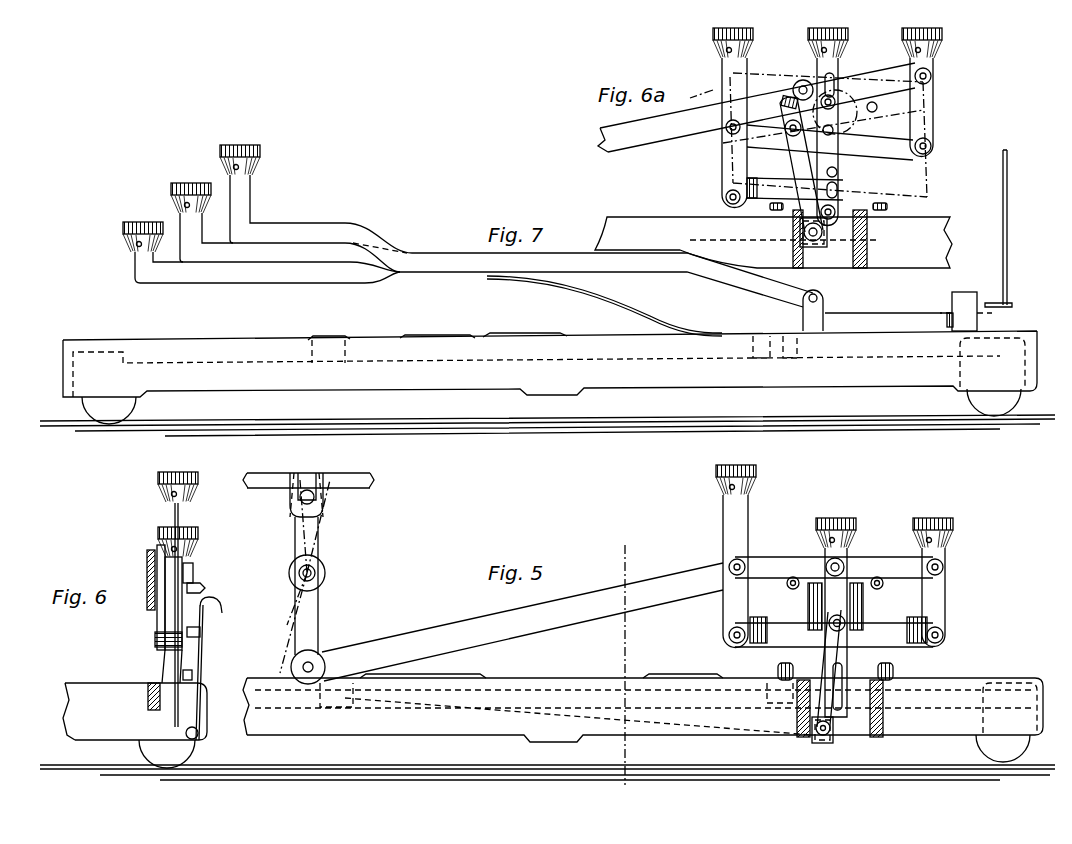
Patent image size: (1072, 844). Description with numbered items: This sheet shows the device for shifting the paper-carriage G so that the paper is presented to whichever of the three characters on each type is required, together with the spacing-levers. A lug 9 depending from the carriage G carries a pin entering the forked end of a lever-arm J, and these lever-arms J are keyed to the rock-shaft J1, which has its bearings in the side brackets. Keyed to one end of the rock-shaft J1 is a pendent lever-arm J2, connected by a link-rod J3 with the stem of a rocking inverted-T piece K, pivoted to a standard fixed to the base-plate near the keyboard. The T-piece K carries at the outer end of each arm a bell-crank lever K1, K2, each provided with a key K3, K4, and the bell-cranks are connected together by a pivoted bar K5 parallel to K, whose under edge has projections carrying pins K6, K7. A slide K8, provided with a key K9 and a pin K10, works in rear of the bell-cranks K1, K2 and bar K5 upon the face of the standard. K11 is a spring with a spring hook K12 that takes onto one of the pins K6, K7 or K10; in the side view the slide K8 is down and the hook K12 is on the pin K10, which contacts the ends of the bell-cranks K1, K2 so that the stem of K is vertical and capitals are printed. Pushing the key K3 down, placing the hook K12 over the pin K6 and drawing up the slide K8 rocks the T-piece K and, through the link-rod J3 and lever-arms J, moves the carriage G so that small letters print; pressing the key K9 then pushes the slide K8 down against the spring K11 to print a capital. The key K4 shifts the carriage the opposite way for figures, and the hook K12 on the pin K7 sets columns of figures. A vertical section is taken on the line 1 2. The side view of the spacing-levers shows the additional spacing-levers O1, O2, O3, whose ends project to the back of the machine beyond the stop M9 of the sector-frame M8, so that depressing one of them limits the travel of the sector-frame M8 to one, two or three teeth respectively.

In FIG. 7, the car frame A is at (547, 383).
In FIG. 6A, the car frame A is at (773, 235).
In FIG. 5, the car frame A is at (547, 721).
In FIG. 6, the car frame A is at (135, 725).
In FIG. 7, the spacing-lever O1 is at (585, 240).
In FIG. 7, the spacing-lever O2 is at (285, 227).
In FIG. 7, the spacing-lever O3 is at (261, 253).
In FIG. 7, the sector-frame M8 is at (1008, 236).
In FIG. 7, the stop M9 is at (987, 282).
In FIG. 6A, the rocking inverted-T piece K is at (830, 142).
In FIG. 5, the rocking inverted-T piece K is at (850, 553).
In FIG. 6, the rocking inverted-T piece K is at (157, 634).
In FIG. 6A, the bell-crank lever K1 is at (722, 150).
In FIG. 5, the bell-crank lever K1 is at (722, 605).
In FIG. 6, the bell-crank lever K1 is at (180, 515).
In FIG. 6A, the bell-crank lever K2 is at (933, 118).
In FIG. 5, the bell-crank lever K2 is at (945, 605).
In FIG. 6A, the key K3 is at (712, 33).
In FIG. 5, the key K3 is at (757, 470).
In FIG. 6, the key K3 is at (158, 480).
In FIG. 6A, the key K4 is at (943, 36).
In FIG. 5, the key K4 is at (945, 520).
In FIG. 6A, the pivoted bar K5 is at (835, 100).
In FIG. 5, the pivoted bar K5 is at (880, 575).
In FIG. 6, the pivoted bar K5 is at (193, 570).
In FIG. 6A, the pin K6 is at (789, 136).
In FIG. 5, the pin K6 is at (793, 589).
In FIG. 6, the pin K6 is at (205, 588).
In FIG. 6A, the pin K7 is at (884, 111).
In FIG. 5, the pin K7 is at (880, 589).
In FIG. 6A, the slide K8 is at (834, 150).
In FIG. 5, the slide K8 is at (838, 662).
In FIG. 6, the slide K8 is at (200, 665).
In FIG. 6A, the key K9 is at (848, 35).
In FIG. 5, the key K9 is at (845, 518).
In FIG. 6, the key K9 is at (158, 533).
In FIG. 6A, the pin K10 is at (833, 128).
In FIG. 5, the pin K10 is at (845, 620).
In FIG. 6, the pin K10 is at (200, 632).
In FIG. 6A, the spring K11 is at (775, 238).
In FIG. 5, the spring K11 is at (812, 743).
In FIG. 6, the spring K11 is at (198, 742).
In FIG. 6A, the spring hook K12 is at (805, 150).
In FIG. 6, the spring hook K12 is at (192, 675).
In FIG. 5, the lever-arm J is at (305, 576).
In FIG. 5, the rock-shaft J1 is at (326, 573).
In FIG. 5, the pendent lever-arm J2 is at (308, 651).
In FIG. 6A, the link-rod J3 is at (756, 107).
In FIG. 5, the link-rod J3 is at (522, 622).
In FIG. 6, the link-rod J3 is at (147, 600).
In FIG. 5, the paper-carriage G is at (272, 476).
In FIG. 5, the clevis 9 is at (313, 475).
In FIG. 5, the section line 1 is at (623, 655).
In FIG. 5, the section line 2 is at (625, 799).